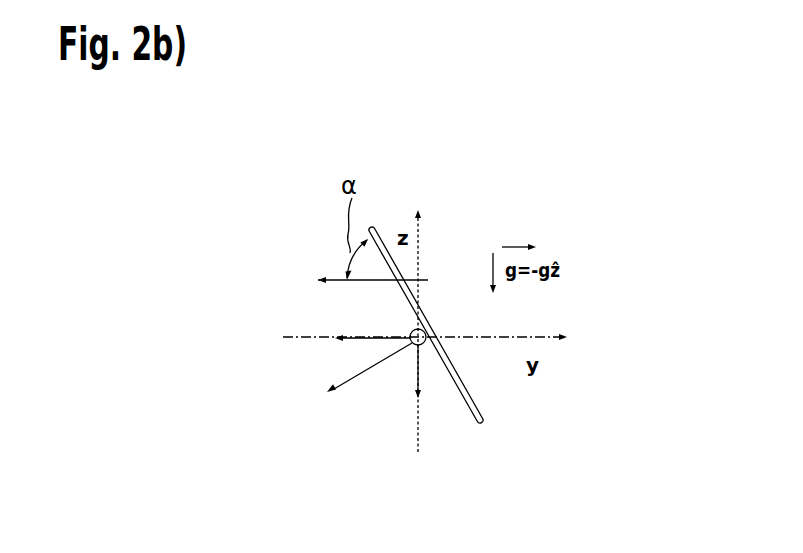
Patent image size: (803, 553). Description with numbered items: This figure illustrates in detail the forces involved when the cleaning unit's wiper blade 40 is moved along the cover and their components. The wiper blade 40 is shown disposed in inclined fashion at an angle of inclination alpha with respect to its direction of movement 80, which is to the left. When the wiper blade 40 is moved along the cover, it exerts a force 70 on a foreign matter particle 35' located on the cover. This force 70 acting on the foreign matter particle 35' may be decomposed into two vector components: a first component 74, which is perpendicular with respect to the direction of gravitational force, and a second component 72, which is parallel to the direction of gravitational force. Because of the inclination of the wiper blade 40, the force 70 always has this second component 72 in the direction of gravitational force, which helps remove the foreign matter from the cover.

The wiper blade 40 is at (477, 423).
The direction of movement 80 is at (333, 278).
The foreign matter particle 35' is at (350, 310).
The first component 74 is at (362, 334).
The force 70 is at (358, 365).
The second component 72 is at (420, 375).